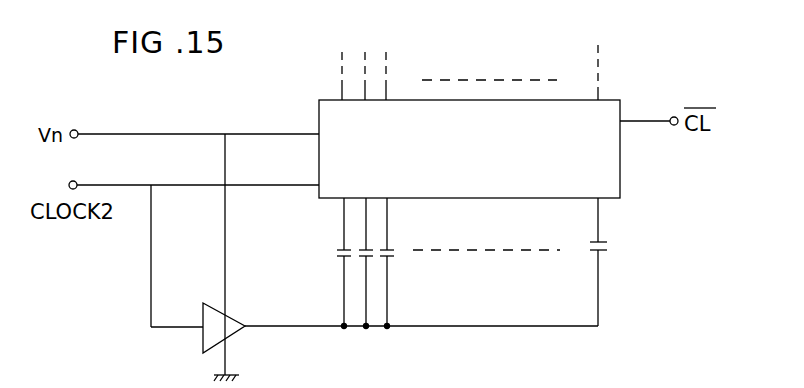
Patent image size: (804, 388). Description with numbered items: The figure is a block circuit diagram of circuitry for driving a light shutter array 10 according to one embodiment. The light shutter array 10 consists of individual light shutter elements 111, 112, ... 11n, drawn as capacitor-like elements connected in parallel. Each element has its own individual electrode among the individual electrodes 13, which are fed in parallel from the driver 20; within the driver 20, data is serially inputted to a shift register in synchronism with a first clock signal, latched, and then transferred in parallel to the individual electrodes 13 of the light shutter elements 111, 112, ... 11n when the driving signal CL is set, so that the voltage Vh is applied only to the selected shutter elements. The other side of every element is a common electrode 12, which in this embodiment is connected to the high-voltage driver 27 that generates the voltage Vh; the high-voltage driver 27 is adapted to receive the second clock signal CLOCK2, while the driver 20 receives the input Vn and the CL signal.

The driver 20 is at (604, 108).
The individual electrodes 13 is at (344, 212).
The light shutter element 111 is at (338, 253).
The light shutter element 112 is at (360, 252).
The light shutter element 11n is at (612, 248).
The light shutter array 10 is at (617, 242).
The common electrode 12 is at (320, 328).
The high-voltage driver 27 is at (203, 336).